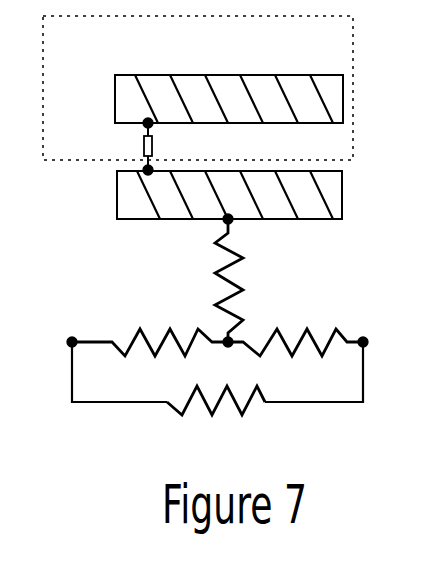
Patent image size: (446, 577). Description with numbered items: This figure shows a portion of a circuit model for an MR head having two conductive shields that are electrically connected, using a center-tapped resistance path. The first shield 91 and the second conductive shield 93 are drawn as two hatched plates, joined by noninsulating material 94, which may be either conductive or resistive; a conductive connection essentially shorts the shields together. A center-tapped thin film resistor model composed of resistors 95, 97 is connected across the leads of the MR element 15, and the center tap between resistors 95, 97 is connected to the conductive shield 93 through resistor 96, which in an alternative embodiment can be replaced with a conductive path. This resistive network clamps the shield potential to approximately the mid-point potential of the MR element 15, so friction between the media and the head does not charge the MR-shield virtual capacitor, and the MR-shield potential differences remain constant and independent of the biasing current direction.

The first shield 91 is at (320, 82).
The second conductive shield 93 is at (335, 202).
The noninsulating material 94 is at (140, 140).
The resistor 96 is at (255, 282).
The resistor 95 is at (135, 324).
The resistor 97 is at (343, 325).
The MR element 15 is at (252, 413).